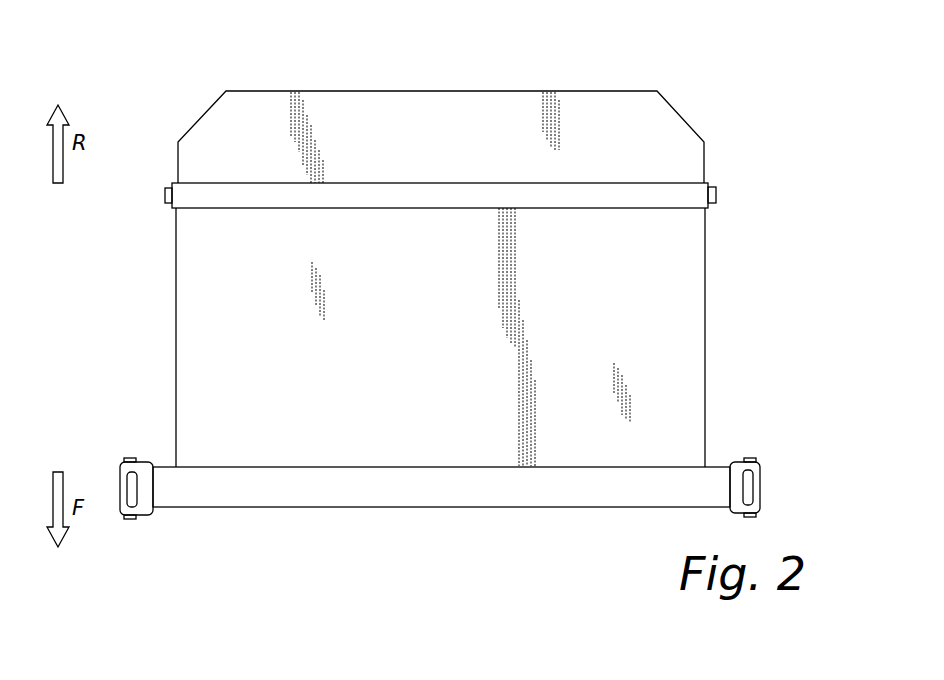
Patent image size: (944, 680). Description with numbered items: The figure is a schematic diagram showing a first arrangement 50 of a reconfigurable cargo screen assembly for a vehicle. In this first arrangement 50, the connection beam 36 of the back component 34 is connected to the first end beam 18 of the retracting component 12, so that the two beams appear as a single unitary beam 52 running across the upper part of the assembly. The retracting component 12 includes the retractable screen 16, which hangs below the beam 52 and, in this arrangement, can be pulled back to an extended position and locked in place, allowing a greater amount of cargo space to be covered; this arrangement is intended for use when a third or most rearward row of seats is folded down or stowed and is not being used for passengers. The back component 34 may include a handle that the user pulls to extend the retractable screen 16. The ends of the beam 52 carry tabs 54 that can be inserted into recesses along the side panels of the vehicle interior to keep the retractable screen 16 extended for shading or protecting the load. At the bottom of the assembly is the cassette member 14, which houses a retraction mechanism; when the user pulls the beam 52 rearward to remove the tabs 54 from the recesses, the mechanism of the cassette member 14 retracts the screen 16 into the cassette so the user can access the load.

The first arrangement 50 is at (156, 62).
The back component 34 is at (818, 76).
The unitary beam 52 is at (413, 200).
The first end beam 18 is at (440, 195).
The connection beam 36 is at (440, 195).
The tabs 54 is at (165, 194).
The retracting component 12 is at (793, 182).
The retractable screen 16 is at (177, 332).
The cassette member 14 is at (391, 500).